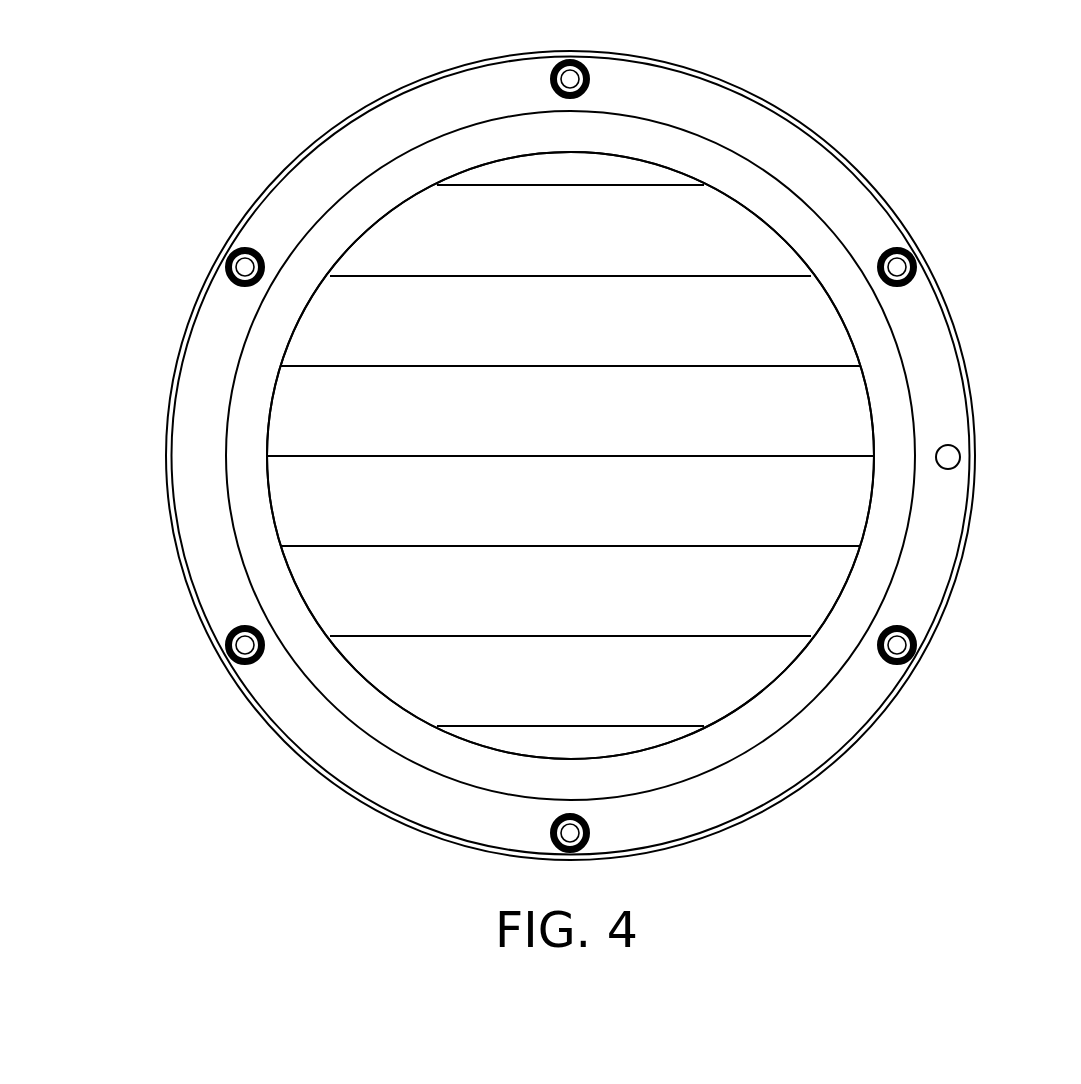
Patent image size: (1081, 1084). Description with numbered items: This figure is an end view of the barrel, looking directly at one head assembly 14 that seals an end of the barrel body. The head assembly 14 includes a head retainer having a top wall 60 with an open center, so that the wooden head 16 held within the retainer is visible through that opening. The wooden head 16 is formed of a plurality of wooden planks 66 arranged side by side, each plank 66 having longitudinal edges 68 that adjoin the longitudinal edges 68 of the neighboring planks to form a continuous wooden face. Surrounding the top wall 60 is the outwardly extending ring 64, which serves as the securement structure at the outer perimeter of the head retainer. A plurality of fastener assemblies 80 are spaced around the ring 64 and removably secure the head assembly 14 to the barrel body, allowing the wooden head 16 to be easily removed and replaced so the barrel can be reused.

The head assembly 14 is at (316, 143).
The wooden head 16 is at (828, 404).
The top wall 60 is at (815, 668).
The ring 64 is at (920, 595).
The wooden plank 66 is at (367, 328).
The longitudinal edge 68 is at (787, 543).
The fastener assembly 80 is at (900, 262).